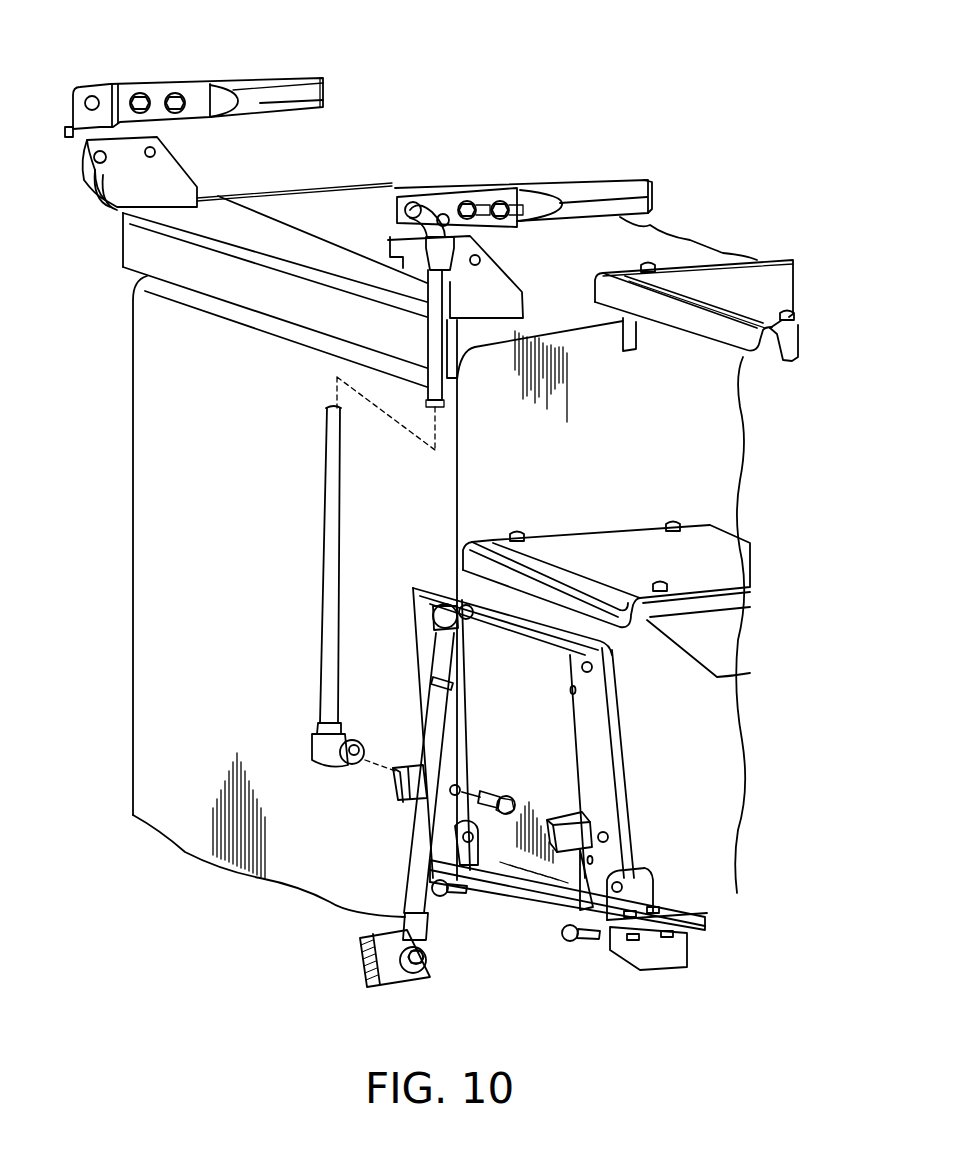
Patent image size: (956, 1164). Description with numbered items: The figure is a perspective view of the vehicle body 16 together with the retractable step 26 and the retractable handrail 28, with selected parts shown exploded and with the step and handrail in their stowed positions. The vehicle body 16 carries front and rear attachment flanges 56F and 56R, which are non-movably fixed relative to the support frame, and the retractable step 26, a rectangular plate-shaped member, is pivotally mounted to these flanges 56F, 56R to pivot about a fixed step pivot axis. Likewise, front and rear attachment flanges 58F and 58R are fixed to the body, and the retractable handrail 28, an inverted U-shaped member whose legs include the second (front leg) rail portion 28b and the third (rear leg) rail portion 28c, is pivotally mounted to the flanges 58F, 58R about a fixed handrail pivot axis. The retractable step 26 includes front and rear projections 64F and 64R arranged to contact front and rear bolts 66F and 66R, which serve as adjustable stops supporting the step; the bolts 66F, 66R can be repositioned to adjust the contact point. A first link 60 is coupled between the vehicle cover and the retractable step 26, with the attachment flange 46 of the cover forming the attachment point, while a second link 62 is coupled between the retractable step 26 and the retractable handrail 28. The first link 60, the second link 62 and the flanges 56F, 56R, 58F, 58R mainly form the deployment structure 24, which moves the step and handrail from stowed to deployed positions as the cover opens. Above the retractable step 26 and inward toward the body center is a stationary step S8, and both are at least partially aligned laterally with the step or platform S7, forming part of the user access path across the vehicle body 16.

The vehicle body 16 is at (683, 191).
The deployment structure 24 is at (298, 624).
The retractable step 26 is at (622, 754).
The retractable handrail 28 is at (361, 114).
The second (front leg) rail portion 28b is at (270, 112).
The third (rear leg) rail portion 28c is at (605, 185).
The attachment flange 46 is at (360, 940).
The front attachment flange 56F is at (457, 830).
The rear attachment flange 56R is at (643, 887).
The front attachment flange 58F is at (150, 193).
The rear attachment flange 58R is at (493, 275).
The first link 60 is at (428, 876).
The second link 62 is at (323, 565).
The front projection 64F is at (397, 777).
The rear projection 64R is at (570, 833).
The front bolt 66F is at (437, 900).
The rear bolt 66R is at (565, 938).
The step or user support platform S7 is at (758, 283).
The stationary step S8 is at (695, 553).